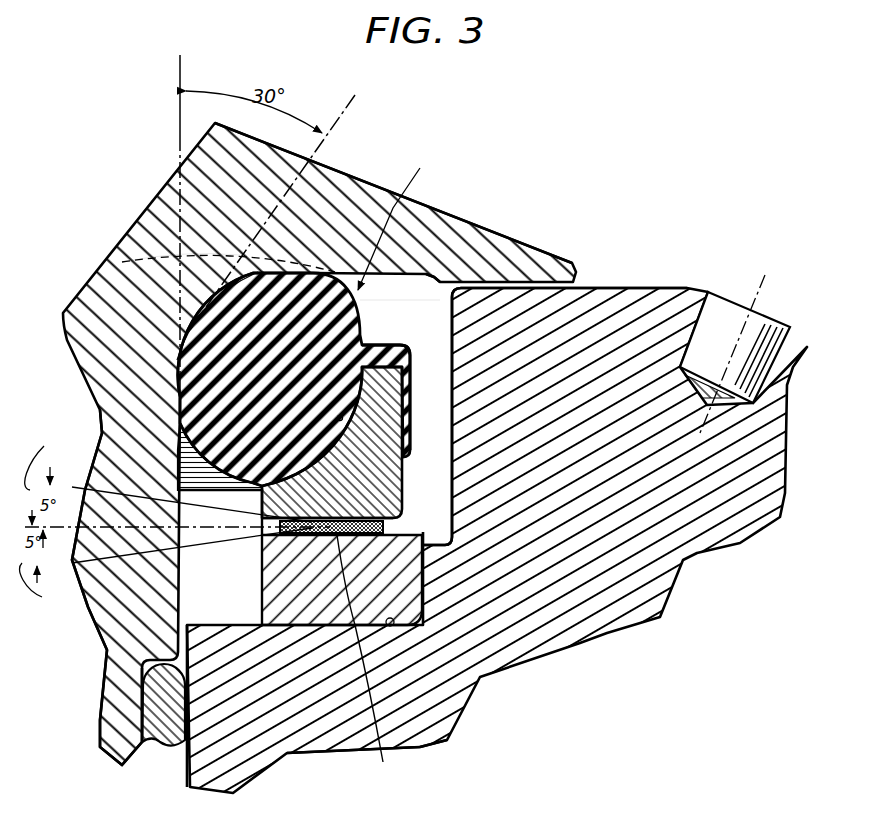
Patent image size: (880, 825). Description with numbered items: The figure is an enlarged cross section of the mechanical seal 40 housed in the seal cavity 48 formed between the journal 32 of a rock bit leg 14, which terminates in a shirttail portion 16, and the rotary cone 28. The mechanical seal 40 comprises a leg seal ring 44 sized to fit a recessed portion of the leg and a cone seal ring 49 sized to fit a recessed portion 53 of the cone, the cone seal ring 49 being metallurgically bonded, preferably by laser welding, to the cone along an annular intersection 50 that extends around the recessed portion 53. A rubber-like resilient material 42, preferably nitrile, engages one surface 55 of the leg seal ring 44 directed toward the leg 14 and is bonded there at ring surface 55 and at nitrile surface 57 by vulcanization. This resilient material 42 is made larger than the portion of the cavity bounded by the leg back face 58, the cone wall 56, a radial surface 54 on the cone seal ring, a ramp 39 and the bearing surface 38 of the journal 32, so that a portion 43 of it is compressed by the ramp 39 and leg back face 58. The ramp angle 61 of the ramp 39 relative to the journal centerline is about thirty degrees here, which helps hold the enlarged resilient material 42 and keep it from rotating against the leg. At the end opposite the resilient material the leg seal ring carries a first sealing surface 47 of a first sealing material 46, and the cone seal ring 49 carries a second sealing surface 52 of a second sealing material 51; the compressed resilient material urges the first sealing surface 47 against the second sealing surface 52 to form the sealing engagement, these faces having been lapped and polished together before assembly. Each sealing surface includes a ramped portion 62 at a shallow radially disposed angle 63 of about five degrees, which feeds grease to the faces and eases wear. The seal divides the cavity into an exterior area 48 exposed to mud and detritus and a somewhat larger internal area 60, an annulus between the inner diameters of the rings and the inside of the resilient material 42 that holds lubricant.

The leg 14 is at (350, 198).
The shirttail portion 16 is at (427, 217).
The cone 28 is at (567, 618).
The journal 32 is at (100, 603).
The bearing surface 38 is at (200, 571).
The ramp 39 is at (213, 307).
The mechanical seal 40 is at (400, 218).
The resilient material 42 is at (411, 386).
The portion of the resilient material 43 is at (122, 262).
The leg seal ring 44 is at (392, 470).
The first sealing material 46 is at (382, 518).
The first sealing surface 47 is at (372, 664).
The seal cavity 48 is at (400, 304).
The cone seal ring 49 is at (412, 598).
The annular intersection 50 is at (357, 579).
The second sealing material 51 is at (262, 540).
The second sealing surface 52 is at (325, 508).
The recessed portion 53 is at (418, 556).
The radial surface 54 is at (384, 526).
The surface of the leg seal ring 55 is at (303, 383).
The cone wall 56 is at (452, 318).
The nitrile surface 57 is at (342, 418).
The leg back face 58 is at (434, 280).
The internal area 60 is at (220, 553).
The ramp angle 61 is at (303, 178).
The ramped portion 62 is at (300, 528).
The radially disposed angle 63 is at (43, 519).